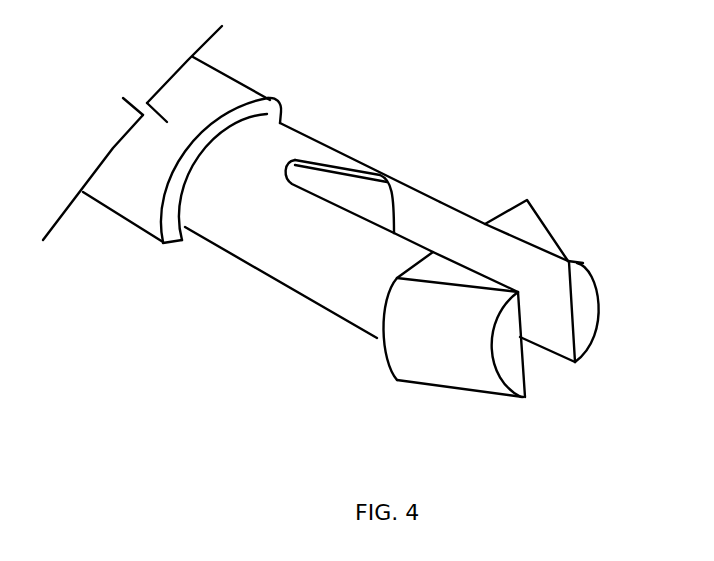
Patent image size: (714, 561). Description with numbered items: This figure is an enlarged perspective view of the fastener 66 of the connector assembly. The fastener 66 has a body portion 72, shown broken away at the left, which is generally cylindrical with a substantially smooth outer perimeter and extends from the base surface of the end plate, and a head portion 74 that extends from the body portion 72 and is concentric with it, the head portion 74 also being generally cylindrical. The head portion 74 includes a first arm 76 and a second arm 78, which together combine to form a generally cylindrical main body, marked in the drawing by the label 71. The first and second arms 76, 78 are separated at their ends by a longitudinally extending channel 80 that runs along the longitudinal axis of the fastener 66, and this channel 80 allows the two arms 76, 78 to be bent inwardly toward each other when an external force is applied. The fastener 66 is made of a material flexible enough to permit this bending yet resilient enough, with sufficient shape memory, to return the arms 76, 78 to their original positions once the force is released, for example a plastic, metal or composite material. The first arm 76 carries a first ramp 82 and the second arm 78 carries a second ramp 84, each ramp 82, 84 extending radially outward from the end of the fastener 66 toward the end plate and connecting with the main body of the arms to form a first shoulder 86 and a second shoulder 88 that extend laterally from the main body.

The fastener 66 is at (367, 93).
The marking on shaft 71 is at (347, 263).
The body portion 72 is at (118, 220).
The head portion 74 is at (285, 303).
The first arm 76 is at (350, 303).
The second arm 78 is at (448, 202).
The channel 80 is at (548, 368).
The first ramp 82 is at (443, 360).
The second ramp 84 is at (568, 238).
The first shoulder 86 is at (412, 263).
The second shoulder 88 is at (508, 200).